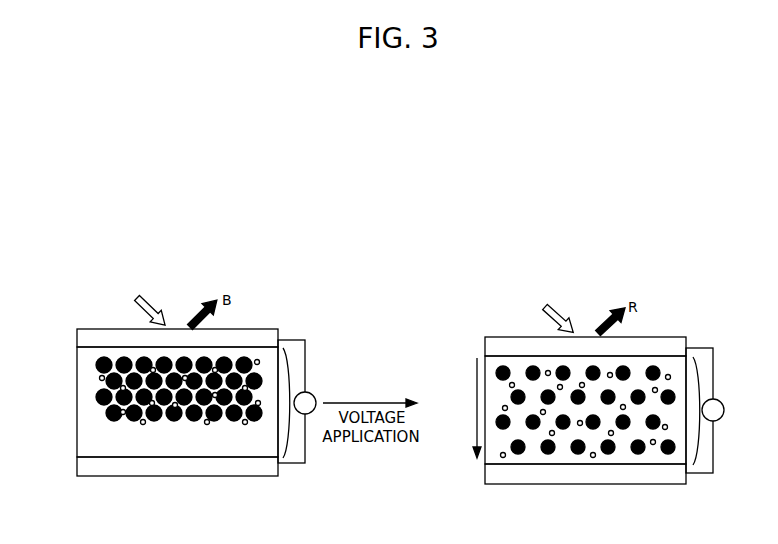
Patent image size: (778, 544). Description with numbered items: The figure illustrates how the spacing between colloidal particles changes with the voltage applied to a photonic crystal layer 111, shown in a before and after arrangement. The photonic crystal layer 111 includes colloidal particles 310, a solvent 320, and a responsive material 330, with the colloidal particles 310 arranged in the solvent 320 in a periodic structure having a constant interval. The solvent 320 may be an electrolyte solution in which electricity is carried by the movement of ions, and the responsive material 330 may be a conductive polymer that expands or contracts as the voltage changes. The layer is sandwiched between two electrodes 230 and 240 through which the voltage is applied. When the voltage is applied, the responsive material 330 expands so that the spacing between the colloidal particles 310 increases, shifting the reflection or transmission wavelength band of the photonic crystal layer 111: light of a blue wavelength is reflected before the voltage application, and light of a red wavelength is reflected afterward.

The photonic crystal layer 111 is at (291, 359).
The electrode 230 is at (78, 338).
The electrode 240 is at (78, 466).
The colloidal particles 310 is at (78, 366).
The solvent 320 is at (78, 392).
The responsive material 330 is at (143, 425).